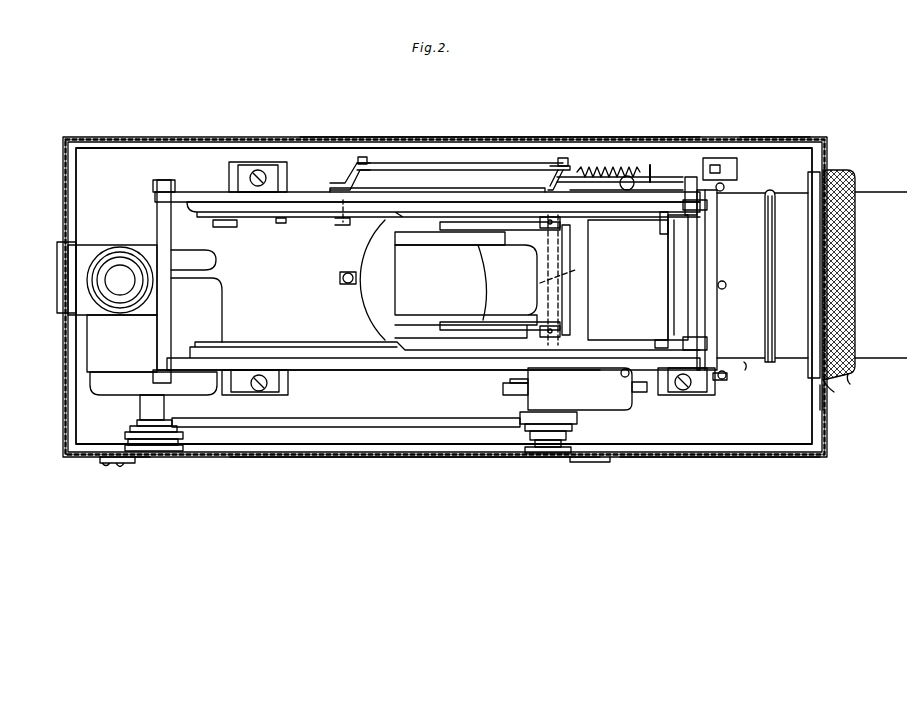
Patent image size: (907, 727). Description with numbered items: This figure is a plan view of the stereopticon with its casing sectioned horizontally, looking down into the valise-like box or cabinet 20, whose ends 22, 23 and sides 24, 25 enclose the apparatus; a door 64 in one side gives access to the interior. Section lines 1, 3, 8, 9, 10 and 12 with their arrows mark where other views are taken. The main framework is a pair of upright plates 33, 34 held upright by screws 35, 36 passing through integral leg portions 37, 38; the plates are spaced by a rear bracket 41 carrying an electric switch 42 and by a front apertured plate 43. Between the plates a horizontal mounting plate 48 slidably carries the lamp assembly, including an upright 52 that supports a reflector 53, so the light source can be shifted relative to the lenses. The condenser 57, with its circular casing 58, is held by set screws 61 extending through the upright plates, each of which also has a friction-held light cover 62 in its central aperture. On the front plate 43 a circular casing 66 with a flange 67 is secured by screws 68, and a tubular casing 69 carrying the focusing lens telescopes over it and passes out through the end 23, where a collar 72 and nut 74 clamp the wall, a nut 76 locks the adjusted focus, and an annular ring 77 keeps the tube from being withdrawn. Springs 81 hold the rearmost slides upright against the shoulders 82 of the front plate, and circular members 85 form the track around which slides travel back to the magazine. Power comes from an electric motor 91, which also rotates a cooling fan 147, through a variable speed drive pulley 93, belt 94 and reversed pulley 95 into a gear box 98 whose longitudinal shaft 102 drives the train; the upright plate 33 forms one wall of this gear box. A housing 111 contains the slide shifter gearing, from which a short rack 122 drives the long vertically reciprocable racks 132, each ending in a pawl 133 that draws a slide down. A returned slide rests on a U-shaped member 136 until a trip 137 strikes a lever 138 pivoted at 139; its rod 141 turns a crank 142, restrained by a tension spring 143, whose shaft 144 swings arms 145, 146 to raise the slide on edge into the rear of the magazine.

The section line 1 is at (30, 434).
The section arrow 3 is at (19, 266).
The section arrow 8 is at (488, 394).
The section arrow 9 is at (650, 386).
The direction arrow 10 is at (665, 218).
The direction arrow 12 is at (490, 168).
The box or cabinet 20 is at (498, 138).
The end 22 is at (65, 186).
The end 23 is at (824, 170).
The side 24 is at (762, 139).
The side 25 is at (768, 458).
The upright plate 33 is at (345, 370).
The upright plate 34 is at (192, 192).
The screw 35 is at (248, 393).
The screw 36 is at (246, 176).
The leg portion 37 is at (275, 394).
The leg portion 38 is at (260, 170).
The rear bracket 41 is at (157, 218).
The electric switch 42 is at (114, 258).
The front apertured plate 43 is at (712, 262).
The horizontal mounting plate 48 is at (318, 289).
The upright 52 is at (348, 272).
The reflector 53 is at (366, 258).
The condenser 57 is at (684, 245).
The circular casing 58 is at (690, 272).
The set screw 61 is at (630, 176).
The light cover 62 is at (686, 338).
The door 64 is at (416, 458).
The circular casing 66 is at (738, 356).
The flange 67 is at (723, 389).
The screw 68 is at (724, 184).
The tubular casing 69 is at (882, 358).
The collar 72 is at (808, 383).
The nut 74 is at (830, 388).
The nut 76 is at (846, 378).
The annular ring 77 is at (771, 362).
The spring 81 is at (592, 213).
The shoulder 82 is at (688, 228).
The circular member 85 is at (397, 202).
The electric motor 91 is at (108, 385).
The variable speed drive pulley 93 is at (125, 441).
The belt 94 is at (270, 428).
The pulley 95 is at (572, 440).
The gear box 98 is at (606, 400).
The shaft 102 is at (508, 390).
The housing 111 is at (668, 148).
The short rack 122 is at (706, 170).
The vertically reciprocable rack 132 is at (706, 208).
The pawl 133 is at (640, 212).
The U-shaped member 136 is at (437, 310).
The trip 137 is at (226, 227).
The lever 138 is at (280, 223).
The pivot 139 is at (340, 180).
The rod 141 is at (445, 168).
The crank 142 is at (570, 168).
The tension spring 143 is at (608, 163).
The shaft 144 is at (590, 270).
The arm 145 is at (562, 222).
The arm 146 is at (496, 300).
The fan 147 is at (210, 262).